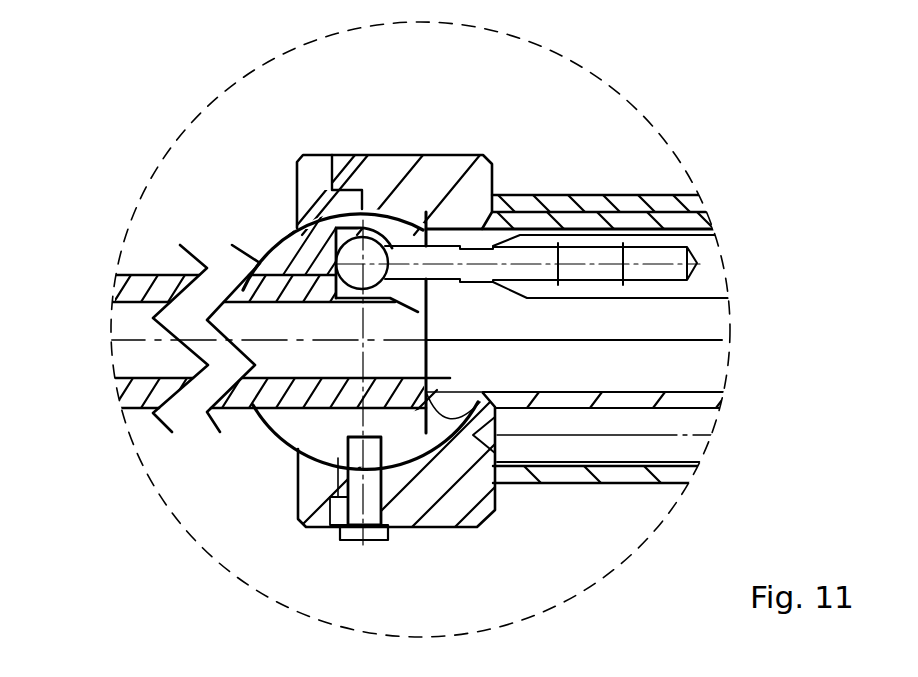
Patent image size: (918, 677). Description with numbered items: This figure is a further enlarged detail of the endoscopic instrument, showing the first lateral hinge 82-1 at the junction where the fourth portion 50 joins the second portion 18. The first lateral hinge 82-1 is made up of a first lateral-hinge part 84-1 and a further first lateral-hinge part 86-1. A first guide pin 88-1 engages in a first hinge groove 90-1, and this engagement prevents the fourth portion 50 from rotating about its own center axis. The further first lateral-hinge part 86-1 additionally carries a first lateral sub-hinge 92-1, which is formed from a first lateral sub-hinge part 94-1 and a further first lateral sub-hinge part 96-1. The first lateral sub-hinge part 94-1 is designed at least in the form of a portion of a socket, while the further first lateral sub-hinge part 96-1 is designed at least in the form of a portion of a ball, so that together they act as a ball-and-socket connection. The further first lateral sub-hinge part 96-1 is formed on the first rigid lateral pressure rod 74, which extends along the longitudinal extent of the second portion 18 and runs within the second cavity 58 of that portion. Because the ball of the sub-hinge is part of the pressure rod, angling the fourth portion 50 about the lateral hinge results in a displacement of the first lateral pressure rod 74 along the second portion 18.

The second portion 18 is at (647, 195).
The fourth portion 50 is at (143, 273).
The second cavity 58 is at (637, 381).
The first rigid lateral pressure rod 74 is at (708, 291).
The first lateral hinge 82-1 is at (493, 135).
The first lateral-hinge part 84-1 is at (283, 209).
The further first lateral-hinge part 86-1 is at (275, 453).
The first guide pin 88-1 is at (380, 545).
The first hinge groove 90-1 is at (313, 437).
The first lateral sub-hinge 92-1 is at (325, 310).
The first lateral sub-hinge part 94-1 is at (332, 236).
The further first lateral sub-hinge part 96-1 is at (368, 248).